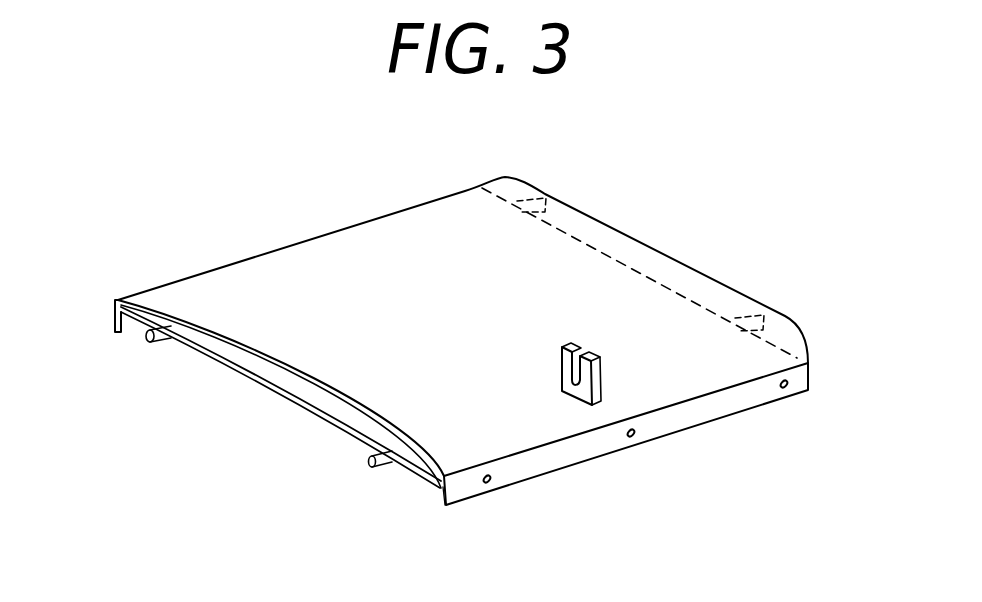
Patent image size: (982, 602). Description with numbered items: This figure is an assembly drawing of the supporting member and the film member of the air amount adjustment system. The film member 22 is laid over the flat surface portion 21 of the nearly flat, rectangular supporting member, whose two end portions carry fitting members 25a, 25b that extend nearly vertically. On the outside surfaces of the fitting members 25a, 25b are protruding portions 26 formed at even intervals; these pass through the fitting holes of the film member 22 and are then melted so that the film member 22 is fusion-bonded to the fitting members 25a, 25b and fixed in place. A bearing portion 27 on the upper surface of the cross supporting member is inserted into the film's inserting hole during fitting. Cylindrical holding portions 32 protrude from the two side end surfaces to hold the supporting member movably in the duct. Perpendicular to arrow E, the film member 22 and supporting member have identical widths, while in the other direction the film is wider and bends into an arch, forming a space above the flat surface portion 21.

The flat surface portion 21 is at (303, 410).
The film member 22 is at (602, 290).
The arrow E is at (681, 292).
The fitting member 25a is at (442, 490).
The fitting member 25b is at (113, 313).
The protruding portions 26 is at (489, 483).
The bearing portion 27 is at (578, 393).
The cylindrical holding portions 32 is at (533, 200).